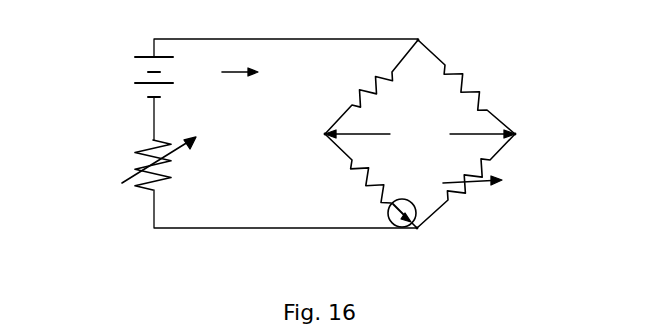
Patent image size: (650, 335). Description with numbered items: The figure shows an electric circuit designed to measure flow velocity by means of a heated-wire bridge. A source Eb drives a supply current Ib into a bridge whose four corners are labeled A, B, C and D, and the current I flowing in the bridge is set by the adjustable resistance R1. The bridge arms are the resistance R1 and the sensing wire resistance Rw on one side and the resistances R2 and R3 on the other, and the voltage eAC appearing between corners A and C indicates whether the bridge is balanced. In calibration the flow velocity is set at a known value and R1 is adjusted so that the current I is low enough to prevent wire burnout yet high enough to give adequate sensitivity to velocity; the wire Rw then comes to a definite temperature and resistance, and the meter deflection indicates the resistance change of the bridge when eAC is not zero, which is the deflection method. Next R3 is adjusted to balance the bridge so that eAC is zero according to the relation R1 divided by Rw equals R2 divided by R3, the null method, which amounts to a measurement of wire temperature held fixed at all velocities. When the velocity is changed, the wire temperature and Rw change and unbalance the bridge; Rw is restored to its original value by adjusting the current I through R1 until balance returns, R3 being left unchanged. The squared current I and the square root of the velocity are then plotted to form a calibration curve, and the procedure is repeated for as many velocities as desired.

The battery / bridge excitation voltage Eb is at (134, 77).
The bridge current Ib is at (239, 89).
The adjustable resistance R1 is at (256, 115).
The bridge resistance R2 is at (466, 87).
The balancing resistance R3 is at (466, 181).
The wire resistance Rw is at (358, 168).
The current I is at (402, 197).
The bridge voltage eAC is at (420, 137).
The bridge point A is at (312, 136).
The bridge node B is at (416, 27).
The bridge point C is at (523, 134).
The bridge node D is at (423, 244).